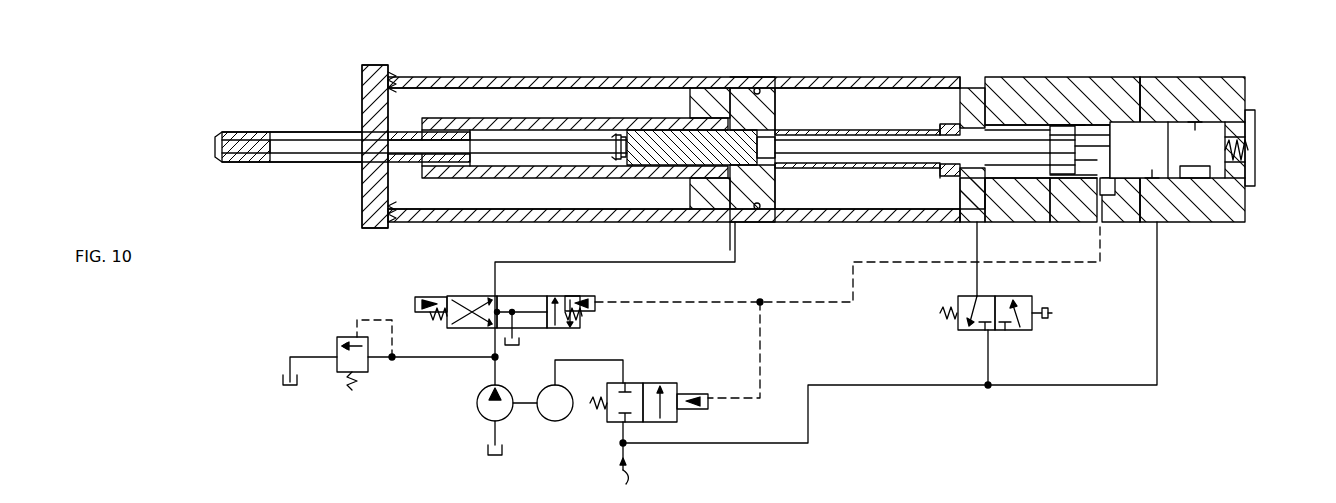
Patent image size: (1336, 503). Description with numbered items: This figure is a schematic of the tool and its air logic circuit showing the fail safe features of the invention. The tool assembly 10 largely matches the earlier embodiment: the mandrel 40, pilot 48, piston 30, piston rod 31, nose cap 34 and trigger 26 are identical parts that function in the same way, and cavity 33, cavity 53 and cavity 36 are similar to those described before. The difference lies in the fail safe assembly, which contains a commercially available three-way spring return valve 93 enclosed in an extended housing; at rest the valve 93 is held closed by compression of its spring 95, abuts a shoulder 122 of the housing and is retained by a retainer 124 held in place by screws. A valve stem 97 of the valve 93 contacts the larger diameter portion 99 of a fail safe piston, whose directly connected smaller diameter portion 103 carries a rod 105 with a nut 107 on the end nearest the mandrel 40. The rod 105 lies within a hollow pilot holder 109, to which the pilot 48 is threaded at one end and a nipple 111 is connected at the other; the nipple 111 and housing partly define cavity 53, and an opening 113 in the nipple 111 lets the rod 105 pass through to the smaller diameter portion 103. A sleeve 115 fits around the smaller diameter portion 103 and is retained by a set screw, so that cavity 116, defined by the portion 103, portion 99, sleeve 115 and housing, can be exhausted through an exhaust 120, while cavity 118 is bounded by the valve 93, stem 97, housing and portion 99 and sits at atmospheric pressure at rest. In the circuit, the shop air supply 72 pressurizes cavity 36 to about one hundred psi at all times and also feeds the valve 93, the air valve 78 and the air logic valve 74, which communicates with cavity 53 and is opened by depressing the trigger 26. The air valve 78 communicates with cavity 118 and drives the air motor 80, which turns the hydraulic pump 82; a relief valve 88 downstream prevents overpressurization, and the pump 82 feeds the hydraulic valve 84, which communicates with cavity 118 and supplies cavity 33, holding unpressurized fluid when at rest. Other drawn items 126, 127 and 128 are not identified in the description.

The tool assembly 10 is at (556, 42).
The trigger 26 is at (1052, 316).
The piston 30 is at (762, 88).
The piston rod 31 is at (478, 118).
The cavity 33 is at (725, 222).
The nose cap 34 is at (362, 205).
The cavity 36 is at (830, 100).
The mandrel 40 is at (288, 113).
The pilot 48 is at (478, 150).
The cavity 53 is at (988, 110).
The air supply 72 is at (622, 486).
The air logic valve 74 is at (994, 297).
The air valve 78 is at (648, 383).
The air motor 80 is at (556, 421).
The hydraulic pump 82 is at (477, 408).
The hydraulic valve 84 is at (528, 297).
The relief valve 88 is at (340, 372).
The valve 93 is at (1215, 80).
The spring 95 is at (1255, 144).
The valve stem 97 is at (1108, 122).
The larger diameter portion 99 is at (1068, 205).
The smaller diameter portion 103 is at (1050, 168).
The rod 105 is at (846, 150).
The nut 107 is at (790, 165).
The pilot holder 109 is at (866, 110).
The nipple 111 is at (958, 110).
The opening 113 is at (948, 190).
The sleeve 115 is at (988, 195).
The cavity 116 is at (1065, 135).
The cavity 118 is at (1085, 118).
The exhaust 120 is at (1032, 110).
The shoulder 122 is at (1135, 112).
The retainer 124 is at (1258, 180).
The retainer 126 is at (712, 100).
The chamber 127 is at (926, 115).
The seal ring 128 is at (942, 130).